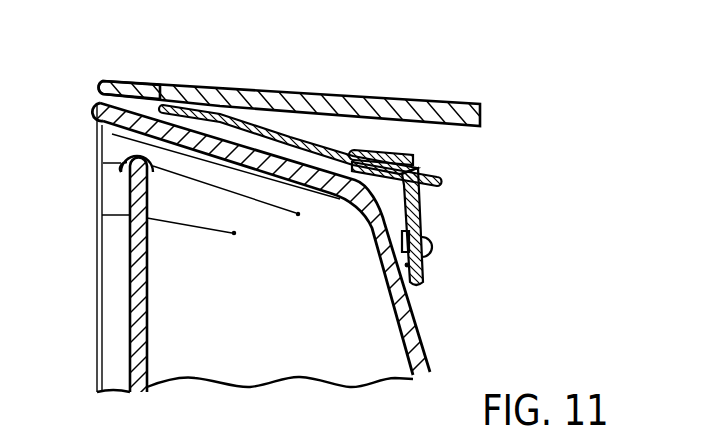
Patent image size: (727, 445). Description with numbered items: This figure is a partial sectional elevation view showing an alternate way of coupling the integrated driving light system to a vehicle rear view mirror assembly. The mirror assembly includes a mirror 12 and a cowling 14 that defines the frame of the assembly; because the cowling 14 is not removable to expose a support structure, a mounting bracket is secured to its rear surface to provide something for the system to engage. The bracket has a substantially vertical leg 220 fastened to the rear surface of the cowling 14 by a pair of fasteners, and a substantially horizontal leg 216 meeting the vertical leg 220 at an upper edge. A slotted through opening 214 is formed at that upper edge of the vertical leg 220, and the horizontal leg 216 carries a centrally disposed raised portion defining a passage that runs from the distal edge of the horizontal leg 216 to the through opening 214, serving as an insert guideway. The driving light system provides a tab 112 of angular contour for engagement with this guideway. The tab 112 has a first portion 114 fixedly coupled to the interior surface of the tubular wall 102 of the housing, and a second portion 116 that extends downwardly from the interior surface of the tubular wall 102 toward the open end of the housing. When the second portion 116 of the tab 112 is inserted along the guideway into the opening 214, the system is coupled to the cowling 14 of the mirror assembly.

The tubular wall 102 is at (433, 104).
The cowling 14 is at (146, 108).
The first portion 114 is at (208, 118).
The mirror 12 is at (130, 254).
The tab 112 is at (298, 130).
The second portion 116 is at (413, 158).
The substantially horizontal leg 216 is at (378, 150).
The slotted through opening 214 is at (438, 181).
The substantially vertical leg 220 is at (423, 268).